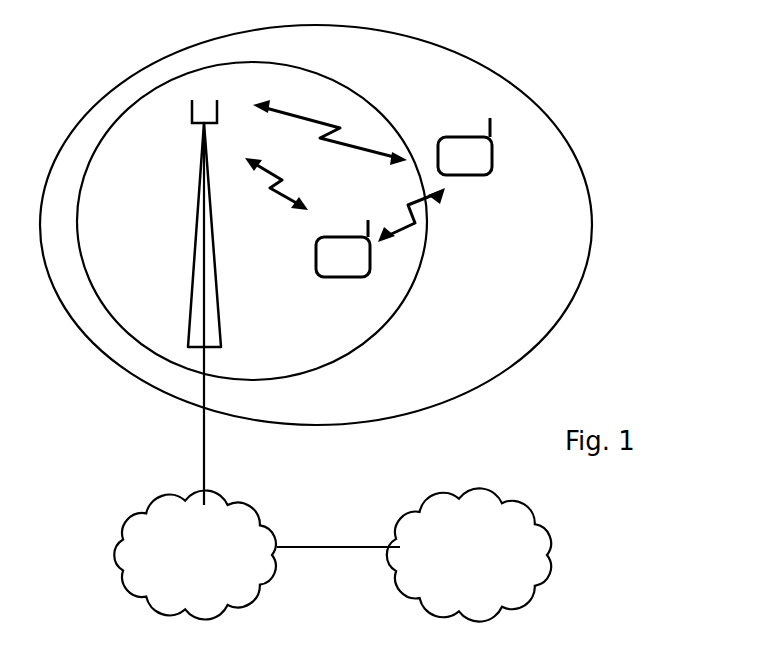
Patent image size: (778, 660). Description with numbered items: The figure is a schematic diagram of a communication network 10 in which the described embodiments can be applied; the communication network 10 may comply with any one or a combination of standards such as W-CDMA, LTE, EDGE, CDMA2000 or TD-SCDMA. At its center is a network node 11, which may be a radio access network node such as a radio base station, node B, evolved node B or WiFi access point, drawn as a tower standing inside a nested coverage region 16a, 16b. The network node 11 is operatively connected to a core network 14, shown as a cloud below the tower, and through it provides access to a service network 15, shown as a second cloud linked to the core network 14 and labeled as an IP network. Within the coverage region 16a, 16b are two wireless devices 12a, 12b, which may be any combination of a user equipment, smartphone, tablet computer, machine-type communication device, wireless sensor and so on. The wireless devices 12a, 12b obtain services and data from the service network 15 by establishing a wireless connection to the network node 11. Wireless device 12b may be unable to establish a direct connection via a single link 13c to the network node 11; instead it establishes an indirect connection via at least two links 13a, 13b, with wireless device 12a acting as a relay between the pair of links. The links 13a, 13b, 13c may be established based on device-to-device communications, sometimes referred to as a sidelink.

The communication network 10 is at (642, 97).
The network node 11 is at (205, 307).
The wireless device 12a is at (357, 262).
The wireless device 12b is at (452, 144).
The link 13a is at (282, 198).
The link 13b is at (407, 212).
The link 13c is at (312, 121).
The core network 14 is at (195, 555).
The service network 15 is at (469, 554).
The coverage region 16a is at (590, 227).
The coverage region 16b is at (363, 343).